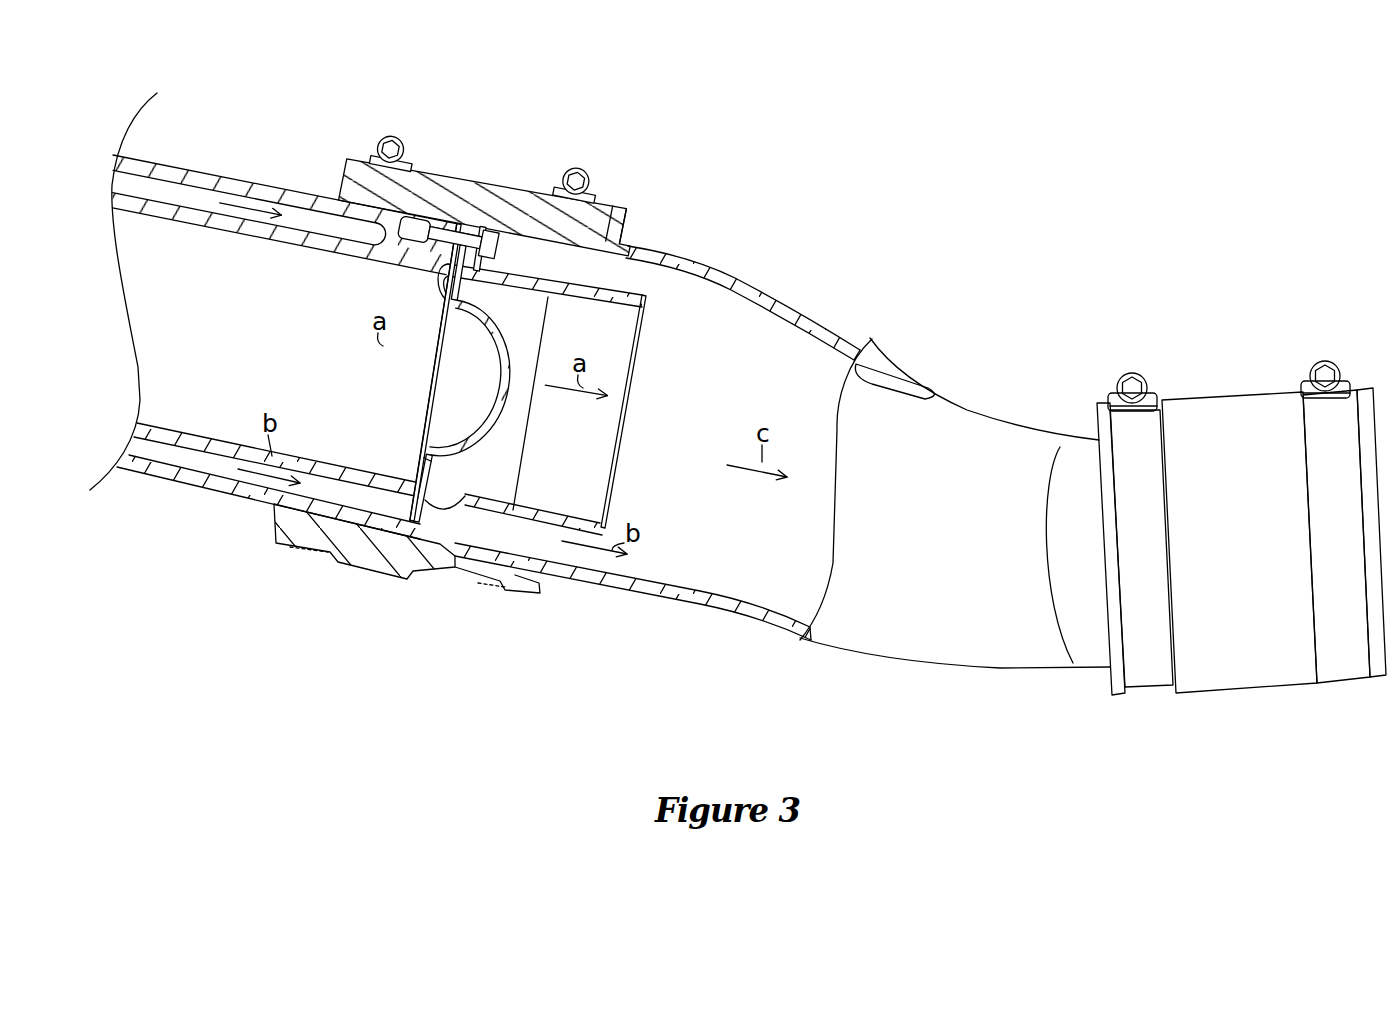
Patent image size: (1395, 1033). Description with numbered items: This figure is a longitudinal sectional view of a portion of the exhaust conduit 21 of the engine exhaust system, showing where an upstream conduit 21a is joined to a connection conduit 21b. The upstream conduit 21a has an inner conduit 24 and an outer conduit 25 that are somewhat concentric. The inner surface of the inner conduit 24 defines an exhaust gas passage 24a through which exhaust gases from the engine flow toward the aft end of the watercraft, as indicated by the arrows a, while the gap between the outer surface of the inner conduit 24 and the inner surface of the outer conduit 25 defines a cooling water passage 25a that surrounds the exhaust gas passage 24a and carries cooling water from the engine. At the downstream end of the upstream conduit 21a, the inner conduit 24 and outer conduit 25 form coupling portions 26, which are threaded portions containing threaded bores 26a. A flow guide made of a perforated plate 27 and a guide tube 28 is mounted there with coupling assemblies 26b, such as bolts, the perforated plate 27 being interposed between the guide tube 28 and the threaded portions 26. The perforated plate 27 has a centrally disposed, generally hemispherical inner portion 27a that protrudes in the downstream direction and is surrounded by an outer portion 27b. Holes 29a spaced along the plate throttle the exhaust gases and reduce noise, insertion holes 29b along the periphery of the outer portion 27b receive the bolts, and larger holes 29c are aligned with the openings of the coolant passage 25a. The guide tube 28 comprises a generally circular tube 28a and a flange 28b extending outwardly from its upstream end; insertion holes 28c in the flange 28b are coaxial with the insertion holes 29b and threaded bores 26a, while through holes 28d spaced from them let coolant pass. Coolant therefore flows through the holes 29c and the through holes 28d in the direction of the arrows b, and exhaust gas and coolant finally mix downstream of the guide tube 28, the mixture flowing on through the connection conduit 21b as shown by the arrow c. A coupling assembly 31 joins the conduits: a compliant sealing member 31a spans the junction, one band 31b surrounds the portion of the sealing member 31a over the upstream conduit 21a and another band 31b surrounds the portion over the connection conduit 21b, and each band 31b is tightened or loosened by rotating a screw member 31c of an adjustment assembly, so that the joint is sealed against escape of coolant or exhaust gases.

The exhaust conduit 21 is at (812, 218).
The upstream conduit 21a is at (255, 121).
The connection conduit 21b is at (832, 330).
The inner conduit 24 is at (193, 212).
The outer conduit 25 is at (237, 182).
The exhaust gas passage 24a is at (167, 436).
The cooling water passage 25a is at (215, 483).
The coupling portion 26 is at (430, 210).
The threaded bore 26a is at (433, 218).
The coupling assembly 26b is at (491, 232).
The perforated plate 27 is at (335, 393).
The inner portion 27a is at (442, 402).
The outer portion 27b is at (414, 462).
The guide tube 28 is at (648, 305).
The circular tube 28a is at (588, 293).
The flange 28b is at (460, 278).
The insertion hole 28c is at (480, 232).
The through hole 28d is at (452, 496).
The hole 29a is at (508, 378).
The insertion hole 29b is at (416, 258).
The hole 29c is at (388, 500).
The coupling assembly 31 is at (600, 182).
The sealing member 31a is at (602, 212).
The band 31b is at (302, 555).
The screw member 31c is at (390, 145).